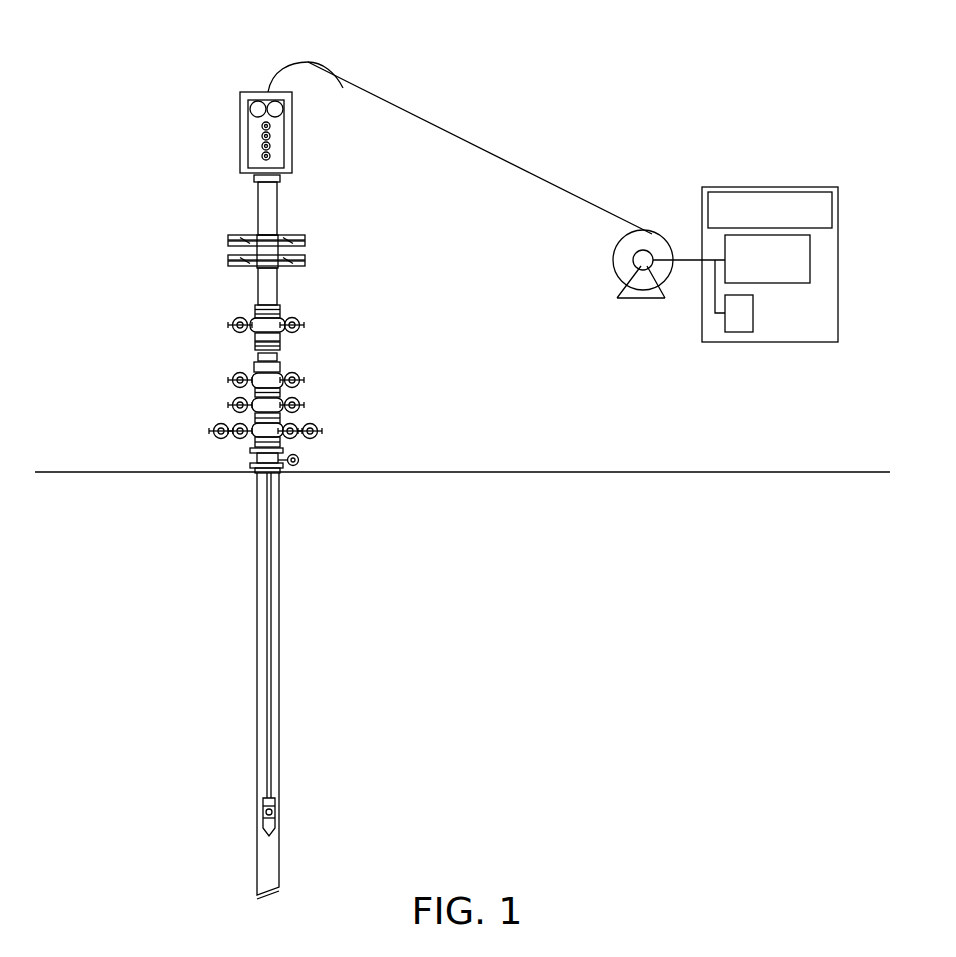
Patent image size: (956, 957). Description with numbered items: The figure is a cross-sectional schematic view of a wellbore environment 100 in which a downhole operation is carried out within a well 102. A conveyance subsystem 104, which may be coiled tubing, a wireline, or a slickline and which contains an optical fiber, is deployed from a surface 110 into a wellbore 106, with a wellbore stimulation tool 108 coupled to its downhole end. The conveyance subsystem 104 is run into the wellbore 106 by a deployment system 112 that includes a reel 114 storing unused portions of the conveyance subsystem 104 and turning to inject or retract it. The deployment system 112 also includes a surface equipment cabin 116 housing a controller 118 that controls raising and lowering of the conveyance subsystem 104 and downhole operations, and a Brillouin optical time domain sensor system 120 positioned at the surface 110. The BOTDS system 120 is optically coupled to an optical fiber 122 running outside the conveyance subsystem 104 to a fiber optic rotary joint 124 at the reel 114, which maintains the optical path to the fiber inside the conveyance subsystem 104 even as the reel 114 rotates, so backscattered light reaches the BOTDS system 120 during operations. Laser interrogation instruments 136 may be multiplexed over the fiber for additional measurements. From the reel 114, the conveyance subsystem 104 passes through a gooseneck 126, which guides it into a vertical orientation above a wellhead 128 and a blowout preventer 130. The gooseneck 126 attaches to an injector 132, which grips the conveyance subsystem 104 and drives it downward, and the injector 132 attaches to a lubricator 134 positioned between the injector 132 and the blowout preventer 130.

The wellbore environment 100 is at (542, 66).
The well 102 is at (224, 593).
The conveyance subsystem 104 is at (505, 150).
The wellbore 106 is at (282, 578).
The wellbore stimulation tool 108 is at (284, 812).
The surface 110 is at (428, 468).
The deployment system 112 is at (699, 109).
The reel 114 is at (614, 252).
The surface equipment cabin 116 is at (742, 187).
The controller 118 is at (810, 192).
The Brillouin optical time domain sensor (BOTDS) system 120 is at (812, 266).
The optical fiber 122 is at (693, 263).
The fiber optic rotary joint (FORJ) 124 is at (641, 299).
The gooseneck 126 is at (301, 60).
The wellhead 128 is at (206, 358).
The blowout preventer 130 is at (214, 243).
The injector 132 is at (240, 132).
The lubricator 134 is at (258, 205).
The laser interrogation instruments 136 is at (740, 334).